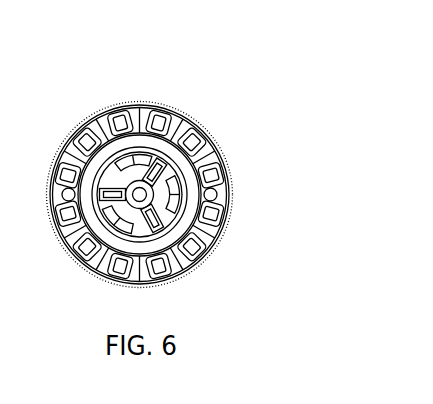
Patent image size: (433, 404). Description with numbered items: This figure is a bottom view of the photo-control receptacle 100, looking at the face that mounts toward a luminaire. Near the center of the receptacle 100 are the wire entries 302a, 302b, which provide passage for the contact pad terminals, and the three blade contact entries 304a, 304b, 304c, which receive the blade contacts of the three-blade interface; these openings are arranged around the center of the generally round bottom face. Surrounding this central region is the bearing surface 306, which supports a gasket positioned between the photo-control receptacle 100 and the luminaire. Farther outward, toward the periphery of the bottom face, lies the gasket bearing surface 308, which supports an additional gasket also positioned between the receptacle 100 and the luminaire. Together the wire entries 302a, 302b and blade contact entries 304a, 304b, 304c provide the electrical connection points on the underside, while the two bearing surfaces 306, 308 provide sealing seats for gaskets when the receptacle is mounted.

The photo-control receptacle 100 is at (239, 107).
The wire entry 302a is at (165, 158).
The wire entry 302b is at (160, 233).
The blade contact entry 304a is at (135, 168).
The blade contact entry 304b is at (171, 197).
The blade contact entry 304c is at (118, 222).
The bearing surface 306 is at (169, 106).
The gasket bearing surface 308 is at (110, 265).